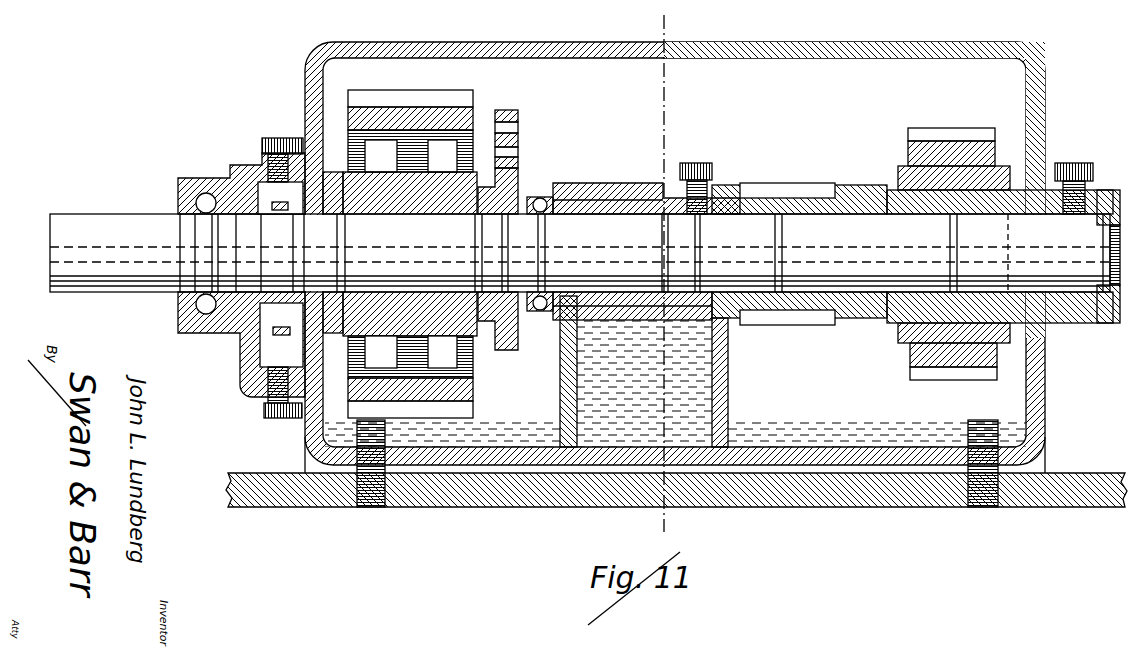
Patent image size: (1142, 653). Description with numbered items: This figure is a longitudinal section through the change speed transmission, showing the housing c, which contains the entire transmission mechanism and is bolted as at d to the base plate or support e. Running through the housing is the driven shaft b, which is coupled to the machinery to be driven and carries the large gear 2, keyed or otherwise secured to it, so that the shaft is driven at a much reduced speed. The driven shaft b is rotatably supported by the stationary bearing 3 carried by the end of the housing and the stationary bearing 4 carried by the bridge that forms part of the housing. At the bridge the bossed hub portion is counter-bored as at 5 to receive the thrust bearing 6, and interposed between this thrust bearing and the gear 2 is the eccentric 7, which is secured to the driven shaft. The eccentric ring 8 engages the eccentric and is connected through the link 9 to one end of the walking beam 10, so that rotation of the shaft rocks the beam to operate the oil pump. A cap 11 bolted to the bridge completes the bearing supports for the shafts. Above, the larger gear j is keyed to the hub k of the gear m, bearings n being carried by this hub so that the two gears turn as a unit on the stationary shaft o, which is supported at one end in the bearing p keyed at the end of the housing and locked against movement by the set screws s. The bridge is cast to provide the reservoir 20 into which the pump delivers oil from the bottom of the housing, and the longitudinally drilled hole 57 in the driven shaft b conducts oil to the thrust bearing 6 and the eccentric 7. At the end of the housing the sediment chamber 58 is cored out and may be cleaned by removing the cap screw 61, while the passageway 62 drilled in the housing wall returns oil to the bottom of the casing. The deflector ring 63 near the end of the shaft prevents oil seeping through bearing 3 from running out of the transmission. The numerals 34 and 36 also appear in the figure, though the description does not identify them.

The large gear 2 is at (385, 107).
The bearing 3 is at (222, 178).
The bearing 4 is at (605, 183).
The counter-bore 5 is at (697, 163).
The thrust bearing 6 is at (545, 198).
The eccentric 7 is at (490, 335).
The eccentric ring 8 is at (518, 182).
The link 9 is at (518, 145).
The walking beam 10 is at (508, 110).
The cap 11 is at (645, 183).
The reservoir 20 is at (560, 390).
The oil reservoir 34 is at (728, 372).
The ring 36 is at (770, 183).
The longitudinally drilled hole 57 is at (568, 247).
The sediment chamber 58 is at (258, 397).
The cap screw 61 is at (276, 138).
The passageway 62 is at (242, 340).
The deflector ring 63 is at (196, 180).
The driven shaft b is at (103, 214).
The housing c is at (578, 42).
The bolts d is at (360, 508).
The base plate e is at (500, 495).
The larger gear j is at (935, 150).
The hub k is at (860, 318).
The gear m is at (790, 183).
The bearings n is at (887, 190).
The stationary shaft o is at (716, 218).
The bearing p is at (1105, 190).
The set screws s is at (1075, 163).